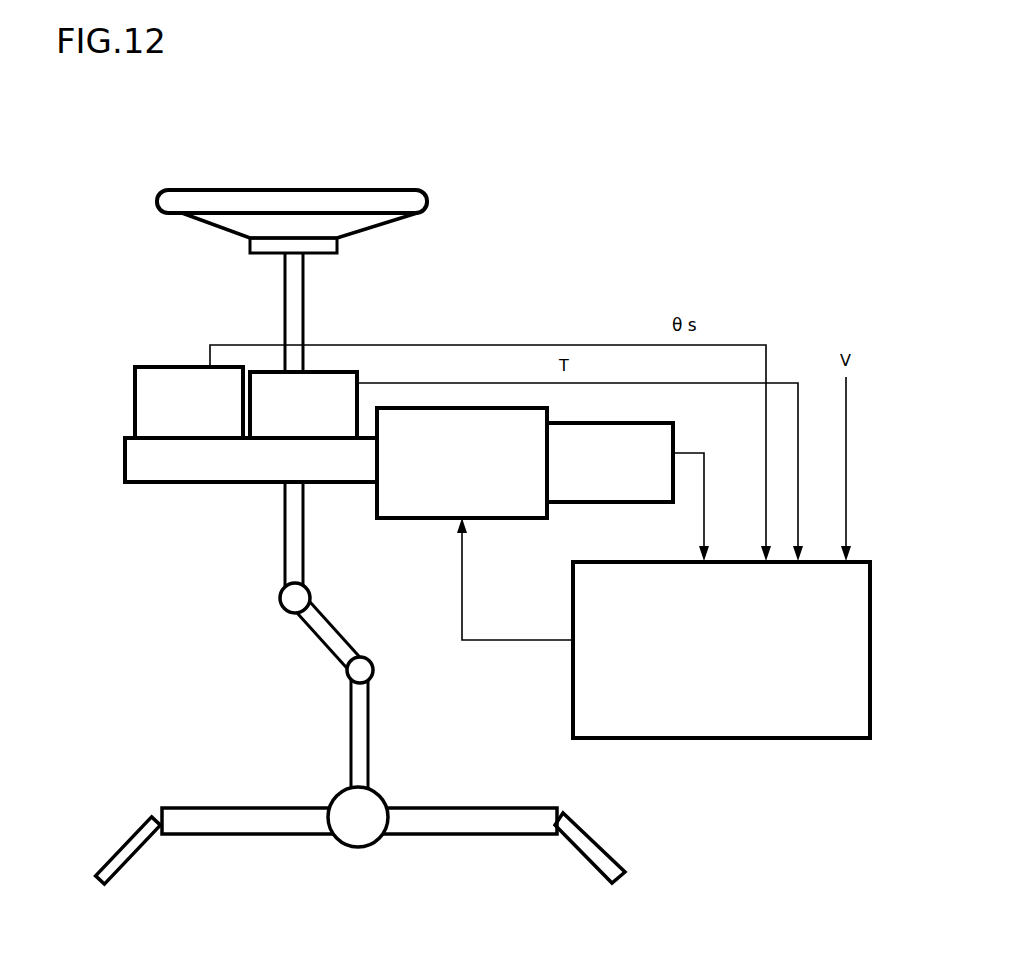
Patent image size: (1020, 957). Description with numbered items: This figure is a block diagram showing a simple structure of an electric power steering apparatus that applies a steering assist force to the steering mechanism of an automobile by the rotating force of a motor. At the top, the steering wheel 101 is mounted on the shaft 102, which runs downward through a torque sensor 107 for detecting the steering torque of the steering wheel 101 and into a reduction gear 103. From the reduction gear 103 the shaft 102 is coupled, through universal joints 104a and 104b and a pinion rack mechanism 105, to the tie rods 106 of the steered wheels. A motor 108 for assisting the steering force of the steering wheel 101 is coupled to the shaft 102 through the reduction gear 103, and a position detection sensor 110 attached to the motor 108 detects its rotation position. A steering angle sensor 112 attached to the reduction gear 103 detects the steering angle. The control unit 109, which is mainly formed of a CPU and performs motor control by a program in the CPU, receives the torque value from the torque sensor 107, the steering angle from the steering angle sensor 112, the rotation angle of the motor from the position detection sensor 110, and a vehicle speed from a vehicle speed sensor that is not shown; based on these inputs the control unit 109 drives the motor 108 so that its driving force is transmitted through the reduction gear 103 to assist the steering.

The steering wheel 101 is at (427, 192).
The shaft 102 is at (303, 311).
The reduction gear 103 is at (190, 484).
The universal joint 104a is at (282, 598).
The universal joint 104b is at (343, 670).
The pinion rack mechanism 105 is at (385, 795).
The tie rods 106 is at (595, 838).
The torque sensor 107 is at (258, 372).
The motor 108 is at (415, 519).
The control unit 109 is at (817, 738).
The position detection sensor 110 is at (652, 422).
The steering angle sensor 112 is at (133, 403).